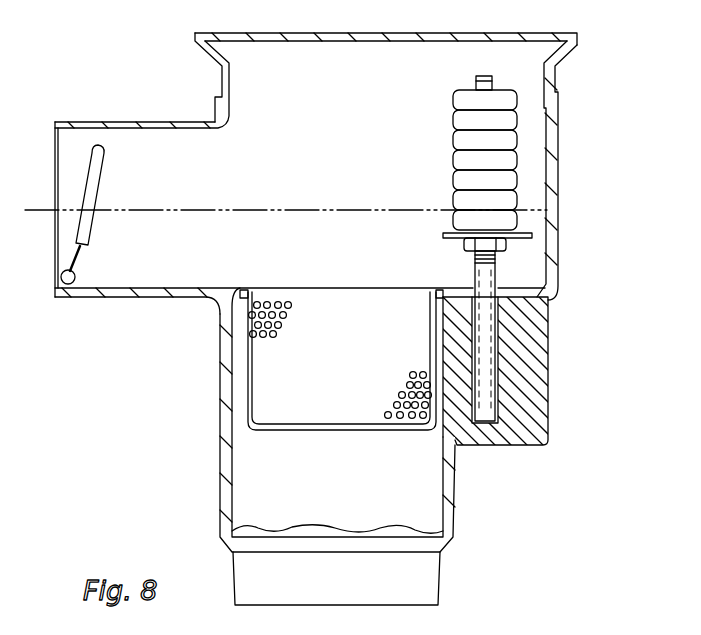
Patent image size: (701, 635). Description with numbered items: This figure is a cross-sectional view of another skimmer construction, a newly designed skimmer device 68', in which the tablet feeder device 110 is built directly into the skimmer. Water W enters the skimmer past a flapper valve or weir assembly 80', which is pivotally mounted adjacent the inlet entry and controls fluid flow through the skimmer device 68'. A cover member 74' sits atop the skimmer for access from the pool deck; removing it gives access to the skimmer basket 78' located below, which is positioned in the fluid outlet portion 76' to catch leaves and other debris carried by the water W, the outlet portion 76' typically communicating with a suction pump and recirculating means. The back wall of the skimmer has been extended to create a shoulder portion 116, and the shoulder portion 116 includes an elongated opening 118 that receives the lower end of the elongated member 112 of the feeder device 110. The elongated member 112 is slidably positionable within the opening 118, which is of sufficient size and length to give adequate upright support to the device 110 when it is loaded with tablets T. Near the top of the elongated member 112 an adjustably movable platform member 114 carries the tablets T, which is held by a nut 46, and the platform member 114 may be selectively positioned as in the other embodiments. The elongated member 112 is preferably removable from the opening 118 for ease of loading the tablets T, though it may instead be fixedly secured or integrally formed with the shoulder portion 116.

The skimmer device 68' is at (316, 177).
The cover member 74' is at (358, 64).
The fluid outlet portion 76' is at (377, 446).
The skimmer basket 78' is at (301, 360).
The flapper valve or weir assembly 80' is at (122, 214).
The tablet feeder device 110 is at (418, 121).
The elongated member 112 is at (473, 270).
The platform member 114 is at (443, 235).
The shoulder portion 116 is at (532, 392).
The elongated opening 118 is at (498, 335).
The nut 46 is at (507, 245).
The tablets T is at (416, 165).
The water flow W is at (158, 248).